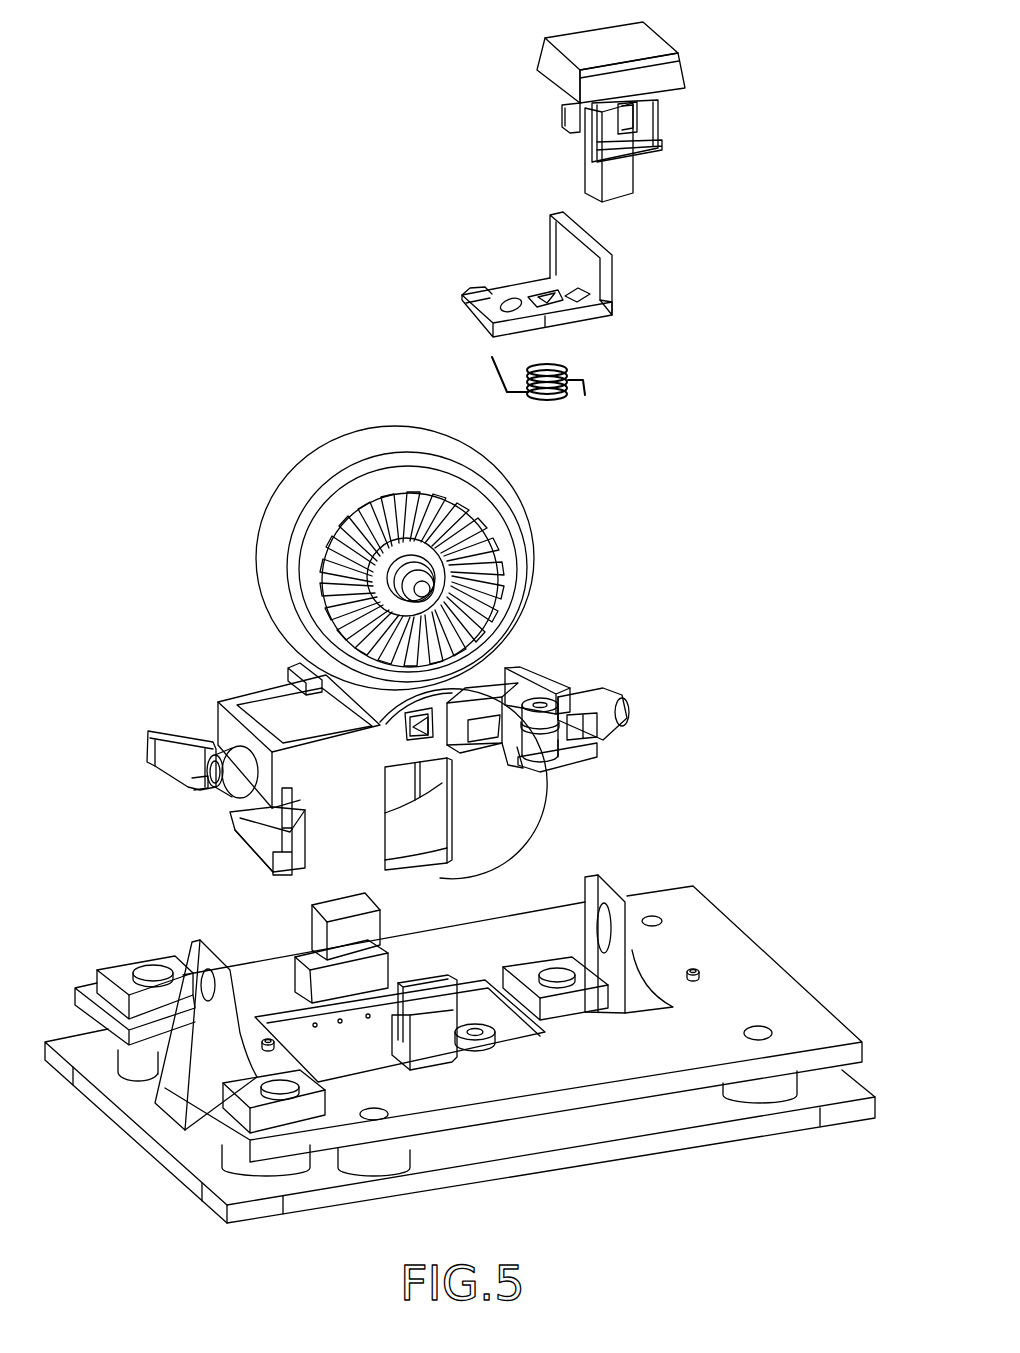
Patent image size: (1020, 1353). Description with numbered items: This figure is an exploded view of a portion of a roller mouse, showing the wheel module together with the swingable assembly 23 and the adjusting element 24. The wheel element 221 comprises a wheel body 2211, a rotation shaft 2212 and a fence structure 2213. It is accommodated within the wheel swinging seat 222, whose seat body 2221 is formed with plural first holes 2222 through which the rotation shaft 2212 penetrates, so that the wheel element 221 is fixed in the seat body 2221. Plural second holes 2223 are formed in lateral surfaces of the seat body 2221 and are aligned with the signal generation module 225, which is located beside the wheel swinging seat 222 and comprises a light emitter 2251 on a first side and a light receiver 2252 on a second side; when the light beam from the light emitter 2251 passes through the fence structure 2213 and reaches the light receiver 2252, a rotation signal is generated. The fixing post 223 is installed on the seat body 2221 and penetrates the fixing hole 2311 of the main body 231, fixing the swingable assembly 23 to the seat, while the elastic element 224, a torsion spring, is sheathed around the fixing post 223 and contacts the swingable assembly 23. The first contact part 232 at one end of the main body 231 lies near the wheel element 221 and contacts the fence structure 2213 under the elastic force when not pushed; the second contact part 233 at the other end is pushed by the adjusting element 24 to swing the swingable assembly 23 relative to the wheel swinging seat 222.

The adjusting element 24 is at (642, 47).
The swingable assembly 23 is at (547, 293).
The main body 231 is at (520, 300).
The first contact part 232 is at (477, 297).
The fixing hole 2311 is at (543, 297).
The second contact part 233 is at (582, 253).
The elastic element 224 is at (567, 398).
The wheel element 221 is at (403, 545).
The wheel body 2211 is at (365, 447).
The rotation shaft 2212 is at (425, 572).
The fence structure 2213 is at (473, 600).
The wheel swinging seat 222 is at (347, 769).
The seat body 2221 is at (305, 768).
The first holes 2222 is at (430, 724).
The second holes 2223 is at (432, 817).
The fixing post 223 is at (547, 740).
The signal generation module 225 is at (460, 1045).
The light emitter 2251 is at (444, 1000).
The light receiver 2252 is at (323, 938).